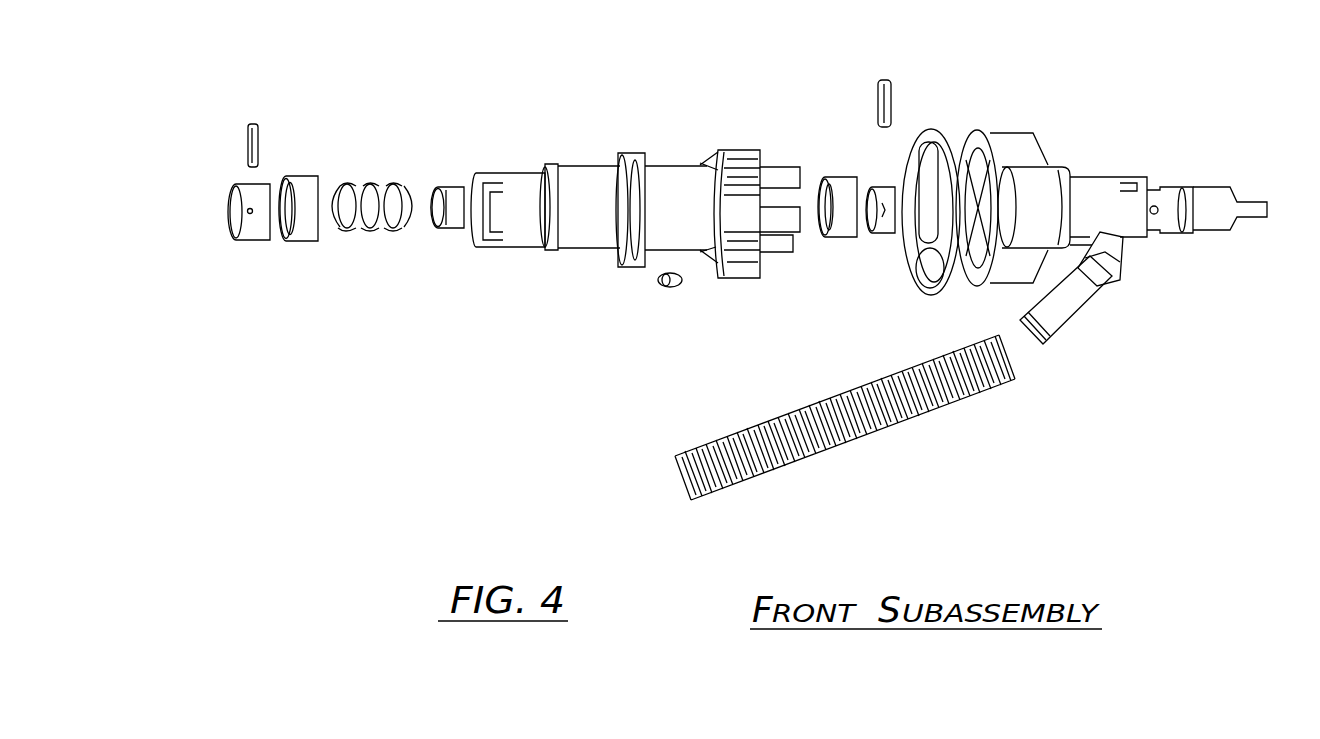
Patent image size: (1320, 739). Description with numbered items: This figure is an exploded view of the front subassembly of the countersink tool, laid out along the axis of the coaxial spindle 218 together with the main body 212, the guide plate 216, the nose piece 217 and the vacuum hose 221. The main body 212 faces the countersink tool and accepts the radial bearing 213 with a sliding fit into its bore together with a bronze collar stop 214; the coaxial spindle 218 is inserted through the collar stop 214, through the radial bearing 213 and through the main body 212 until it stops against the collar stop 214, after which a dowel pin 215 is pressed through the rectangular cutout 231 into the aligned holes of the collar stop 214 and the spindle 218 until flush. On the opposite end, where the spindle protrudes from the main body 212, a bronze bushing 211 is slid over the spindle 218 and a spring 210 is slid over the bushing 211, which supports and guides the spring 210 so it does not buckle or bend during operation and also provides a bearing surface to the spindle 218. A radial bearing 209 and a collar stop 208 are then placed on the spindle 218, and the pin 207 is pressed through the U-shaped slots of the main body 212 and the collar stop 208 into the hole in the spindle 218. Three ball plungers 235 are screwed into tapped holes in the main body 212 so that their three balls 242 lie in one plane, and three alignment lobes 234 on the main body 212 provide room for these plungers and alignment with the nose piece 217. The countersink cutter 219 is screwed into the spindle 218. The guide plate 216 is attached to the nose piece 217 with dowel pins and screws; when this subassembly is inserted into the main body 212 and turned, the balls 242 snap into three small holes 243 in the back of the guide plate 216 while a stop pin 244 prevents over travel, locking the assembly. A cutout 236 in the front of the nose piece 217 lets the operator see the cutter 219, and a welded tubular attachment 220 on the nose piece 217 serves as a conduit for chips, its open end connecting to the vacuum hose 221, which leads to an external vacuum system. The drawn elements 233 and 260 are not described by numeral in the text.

The pin 207 is at (250, 120).
The collar stop 208 is at (243, 244).
The radial bearing 209 is at (298, 243).
The spring 210 is at (360, 183).
The bronze bushing 211 is at (448, 186).
The main body 212 is at (665, 162).
The radial bearing 213 is at (832, 174).
The collar stop 214 is at (882, 233).
The dowel pin 215 is at (877, 88).
The guide plate 216 is at (930, 130).
The nose piece 217 is at (1080, 176).
The coaxial spindle 218 is at (1168, 187).
The countersink cutter 219 is at (1215, 186).
The tubular attachment 220 is at (1072, 318).
The vacuum hose 221 is at (905, 433).
The rectangular cutout 231 is at (760, 148).
The lugs 233 is at (775, 262).
The alignment lobes 234 is at (733, 278).
The ball plungers 235 is at (670, 294).
The cutout 236 is at (998, 165).
The balls 242 is at (655, 288).
The small holes 243 is at (923, 290).
The stop pin 244 is at (917, 247).
The elbow block 260 is at (1128, 242).